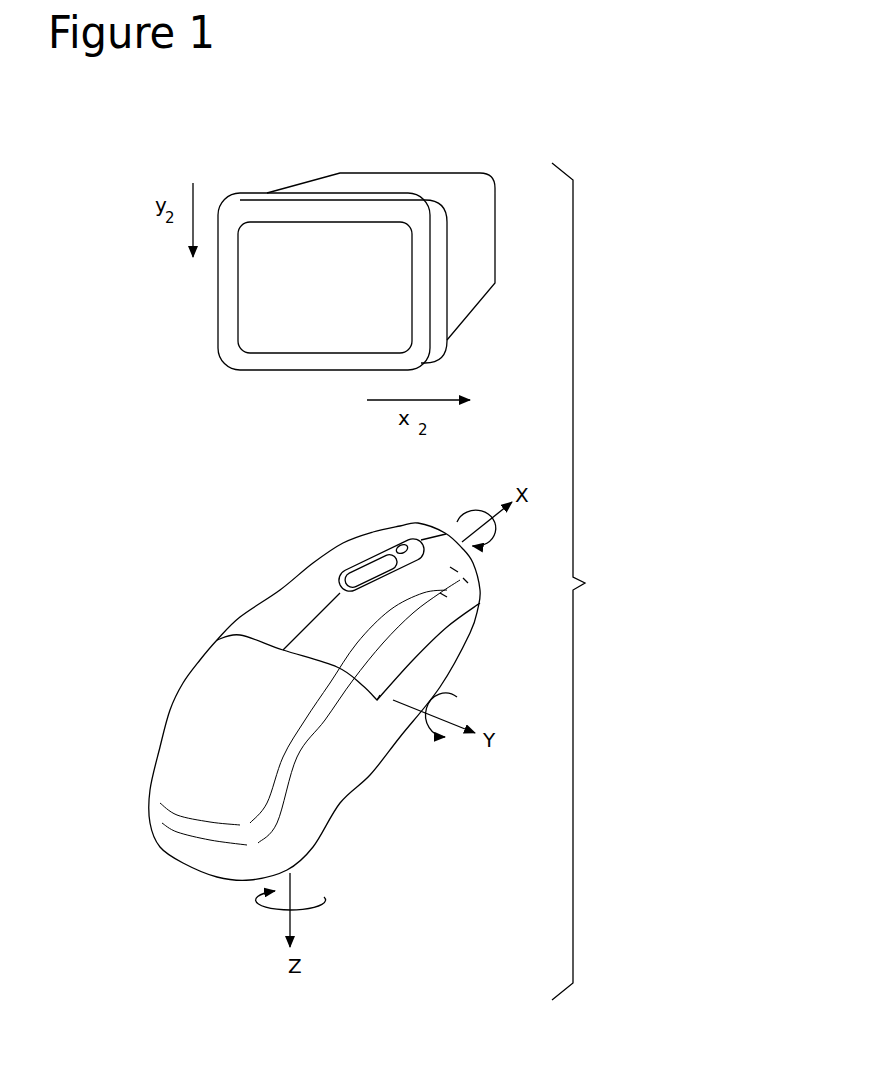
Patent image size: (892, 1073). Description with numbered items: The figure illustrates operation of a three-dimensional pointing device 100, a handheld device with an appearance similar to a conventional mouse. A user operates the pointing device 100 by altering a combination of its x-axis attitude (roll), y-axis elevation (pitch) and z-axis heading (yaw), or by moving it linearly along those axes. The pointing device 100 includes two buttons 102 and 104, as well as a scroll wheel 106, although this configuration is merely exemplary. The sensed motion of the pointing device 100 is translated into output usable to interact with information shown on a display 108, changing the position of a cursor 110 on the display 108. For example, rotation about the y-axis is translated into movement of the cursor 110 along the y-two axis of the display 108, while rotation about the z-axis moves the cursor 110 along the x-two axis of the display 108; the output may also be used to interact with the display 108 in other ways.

The 3D pointing device 100 is at (268, 532).
The button 102 is at (278, 605).
The button 104 is at (443, 617).
The scroll wheel 106 is at (377, 567).
The display 108 is at (384, 295).
The cursor 110 is at (357, 313).